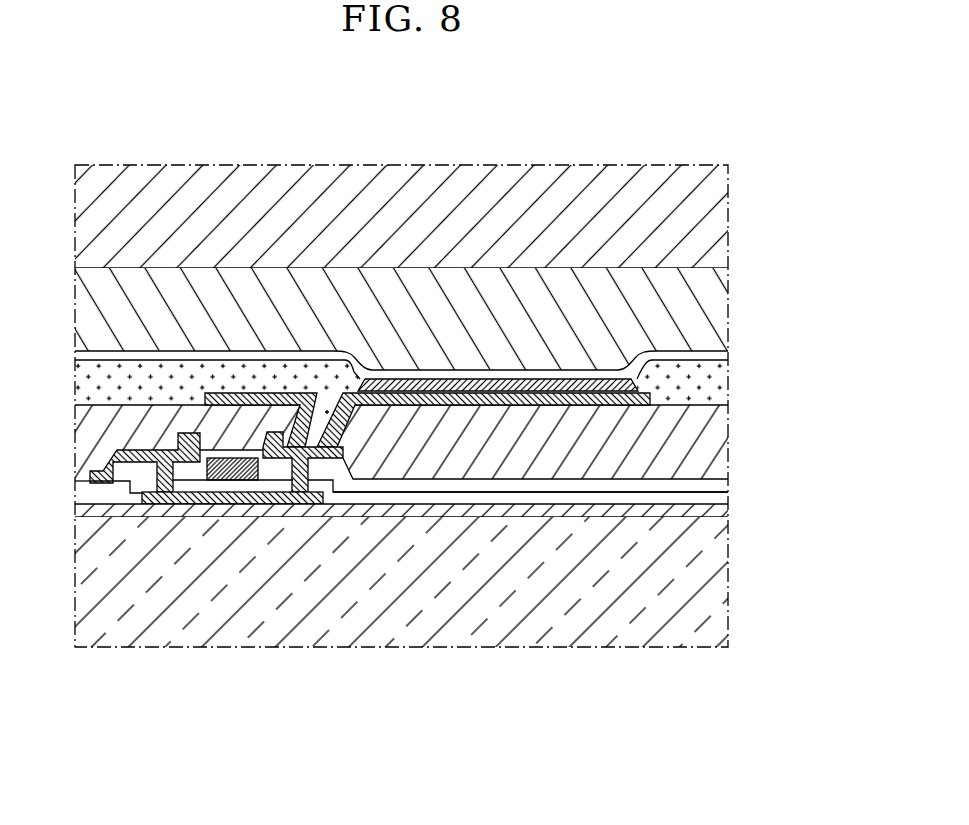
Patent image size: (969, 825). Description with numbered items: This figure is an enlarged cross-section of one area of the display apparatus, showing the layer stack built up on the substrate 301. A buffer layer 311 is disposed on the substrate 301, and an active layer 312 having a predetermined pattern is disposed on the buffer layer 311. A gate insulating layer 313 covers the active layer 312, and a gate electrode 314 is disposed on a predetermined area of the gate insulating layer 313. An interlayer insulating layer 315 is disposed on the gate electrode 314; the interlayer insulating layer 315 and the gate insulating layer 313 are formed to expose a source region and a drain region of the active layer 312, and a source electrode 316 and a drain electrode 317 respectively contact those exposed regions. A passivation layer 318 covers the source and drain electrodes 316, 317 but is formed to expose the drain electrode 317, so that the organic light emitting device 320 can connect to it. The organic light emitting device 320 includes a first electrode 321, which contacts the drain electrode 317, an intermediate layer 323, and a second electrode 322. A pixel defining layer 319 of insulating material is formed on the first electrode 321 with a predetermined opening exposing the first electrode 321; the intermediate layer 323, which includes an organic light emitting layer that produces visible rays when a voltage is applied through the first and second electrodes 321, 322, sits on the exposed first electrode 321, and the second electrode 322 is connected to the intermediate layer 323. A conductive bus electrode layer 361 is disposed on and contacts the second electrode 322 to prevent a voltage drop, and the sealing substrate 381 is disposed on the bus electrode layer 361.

The substrate 301 is at (722, 587).
The buffer layer 311 is at (722, 510).
The active layer 312 is at (185, 505).
The gate insulating layer 313 is at (722, 495).
The gate electrode 314 is at (223, 482).
The interlayer insulating layer 315 is at (722, 484).
The source electrode 316 is at (95, 466).
The drain electrode 317 is at (296, 459).
The passivation layer 318 is at (722, 443).
The pixel defining layer 319 is at (722, 383).
The organic light emitting device 320 is at (401, 257).
The first electrode 321 is at (432, 392).
The second electrode 322 is at (548, 378).
The intermediate layer 323 is at (491, 388).
The bus electrode layer 361 is at (722, 308).
The sealing substrate 381 is at (722, 211).